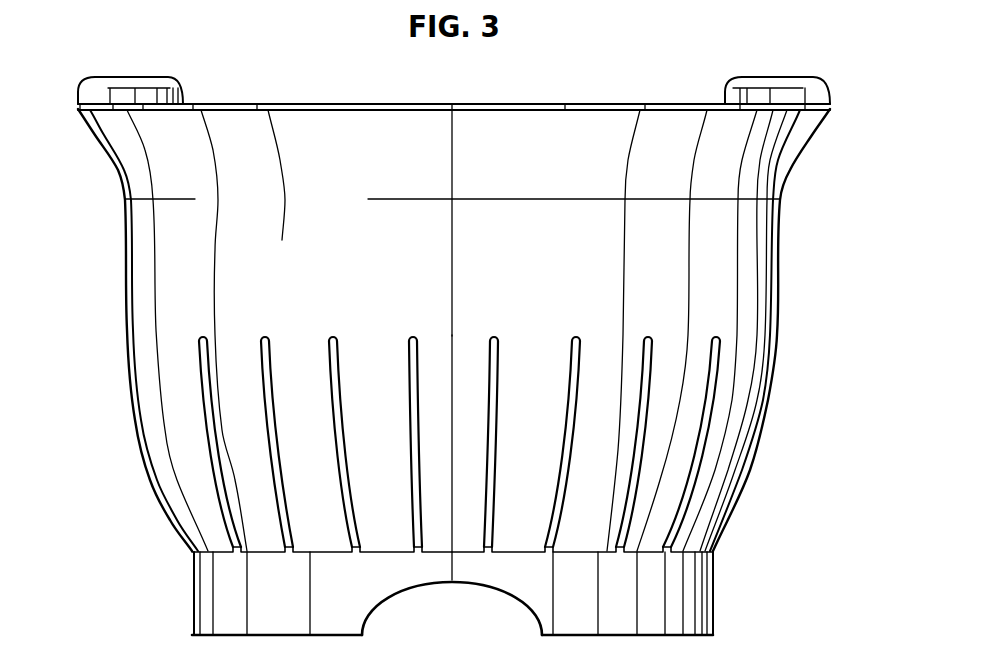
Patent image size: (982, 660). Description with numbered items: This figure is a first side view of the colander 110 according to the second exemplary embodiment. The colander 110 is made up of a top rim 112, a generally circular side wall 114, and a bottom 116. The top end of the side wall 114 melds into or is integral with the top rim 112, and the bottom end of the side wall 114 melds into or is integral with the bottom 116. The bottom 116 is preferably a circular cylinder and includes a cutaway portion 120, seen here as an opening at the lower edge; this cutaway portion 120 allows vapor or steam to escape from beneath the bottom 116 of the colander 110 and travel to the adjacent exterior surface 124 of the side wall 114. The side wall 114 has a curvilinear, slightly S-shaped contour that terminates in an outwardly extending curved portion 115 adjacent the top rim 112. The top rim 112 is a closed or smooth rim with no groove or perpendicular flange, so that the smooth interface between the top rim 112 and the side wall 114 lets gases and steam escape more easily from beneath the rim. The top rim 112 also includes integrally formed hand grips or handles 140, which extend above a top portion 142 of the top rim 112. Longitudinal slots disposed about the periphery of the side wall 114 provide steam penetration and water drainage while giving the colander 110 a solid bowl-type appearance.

The colander 110 is at (780, 340).
The top rim 112 is at (829, 112).
The side wall 114 is at (764, 275).
The outwardly extending curved portion 115 is at (790, 147).
The bottom 116 is at (714, 592).
The cutaway portion 120 is at (487, 590).
The exterior surface 124 is at (563, 284).
The handles 140 is at (178, 82).
The top portion 142 is at (548, 103).